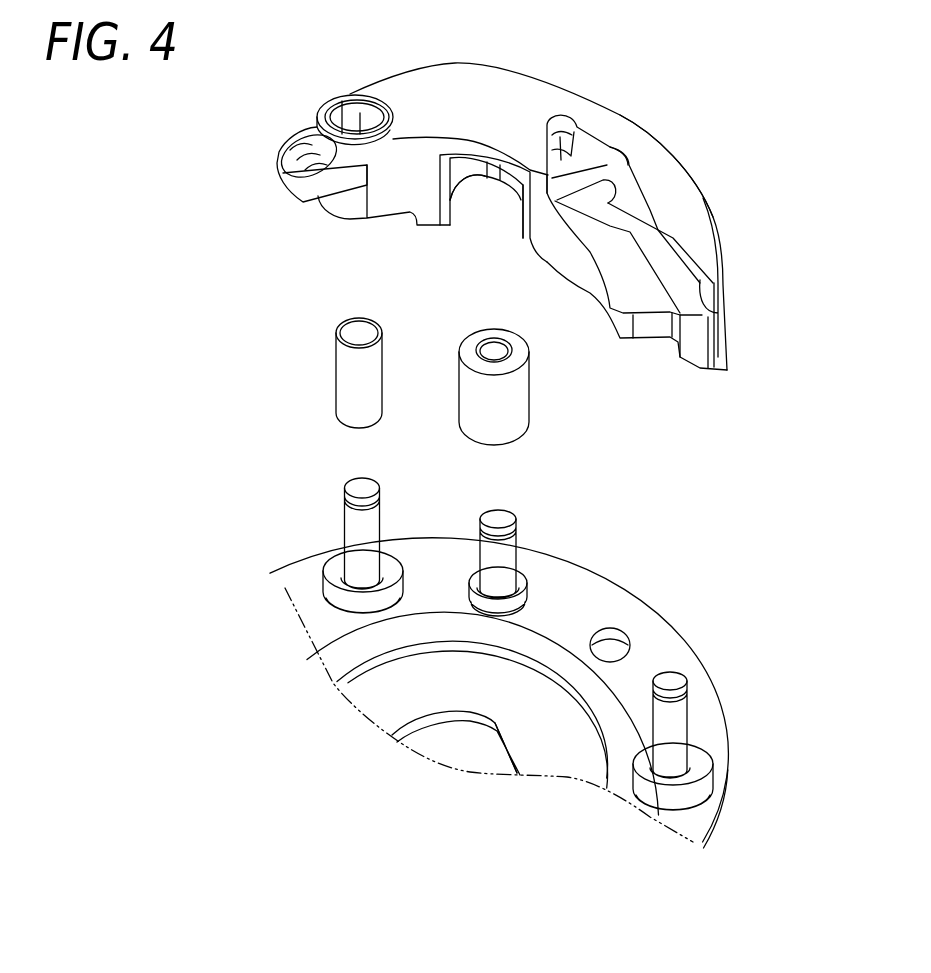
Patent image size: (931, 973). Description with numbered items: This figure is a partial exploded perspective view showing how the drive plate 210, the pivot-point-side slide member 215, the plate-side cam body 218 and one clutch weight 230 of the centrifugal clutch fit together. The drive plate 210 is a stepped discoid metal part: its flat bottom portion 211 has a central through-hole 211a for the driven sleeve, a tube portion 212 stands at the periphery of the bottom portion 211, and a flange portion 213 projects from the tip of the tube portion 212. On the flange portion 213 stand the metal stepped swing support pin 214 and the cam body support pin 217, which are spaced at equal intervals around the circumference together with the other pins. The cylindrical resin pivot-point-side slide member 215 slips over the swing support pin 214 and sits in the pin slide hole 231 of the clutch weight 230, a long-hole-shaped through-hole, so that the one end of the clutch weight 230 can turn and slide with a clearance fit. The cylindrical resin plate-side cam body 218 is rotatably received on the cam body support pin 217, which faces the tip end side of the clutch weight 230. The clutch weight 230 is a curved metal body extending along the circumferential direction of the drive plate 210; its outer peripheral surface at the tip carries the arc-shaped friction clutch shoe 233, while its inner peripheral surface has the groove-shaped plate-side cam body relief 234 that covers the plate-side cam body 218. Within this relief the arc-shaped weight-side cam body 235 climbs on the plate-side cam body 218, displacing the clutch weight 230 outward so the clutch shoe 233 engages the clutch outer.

The drive plate 210 is at (503, 656).
The bottom portion 211 is at (375, 703).
The through-hole 211a is at (503, 752).
The tube portion 212 is at (343, 682).
The flange portion 213 is at (290, 585).
The swing support pin 214 is at (352, 490).
The pivot-point-side slide member 215 is at (343, 378).
The cam body support pin 217 is at (506, 523).
The plate-side cam body 218 is at (519, 407).
The clutch weight 230 is at (529, 190).
The pin slide hole 231 is at (373, 115).
The clutch shoe 233 is at (713, 222).
The plate-side cam body relief 234 is at (463, 175).
The weight-side cam body 235 is at (518, 183).